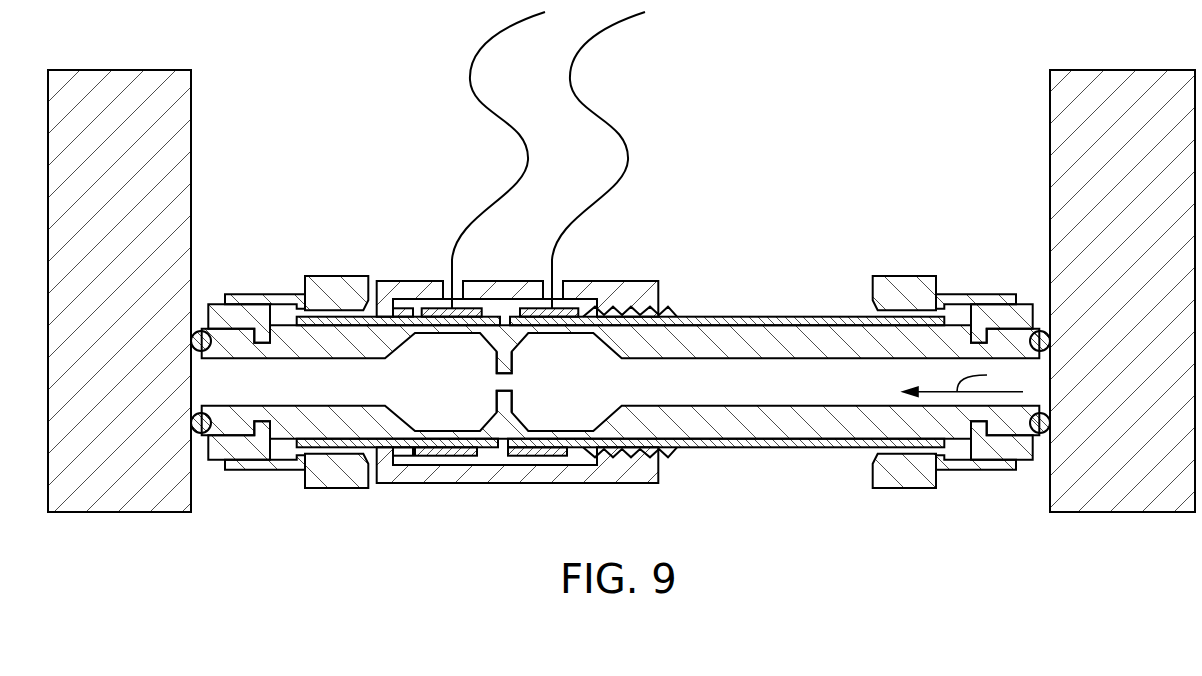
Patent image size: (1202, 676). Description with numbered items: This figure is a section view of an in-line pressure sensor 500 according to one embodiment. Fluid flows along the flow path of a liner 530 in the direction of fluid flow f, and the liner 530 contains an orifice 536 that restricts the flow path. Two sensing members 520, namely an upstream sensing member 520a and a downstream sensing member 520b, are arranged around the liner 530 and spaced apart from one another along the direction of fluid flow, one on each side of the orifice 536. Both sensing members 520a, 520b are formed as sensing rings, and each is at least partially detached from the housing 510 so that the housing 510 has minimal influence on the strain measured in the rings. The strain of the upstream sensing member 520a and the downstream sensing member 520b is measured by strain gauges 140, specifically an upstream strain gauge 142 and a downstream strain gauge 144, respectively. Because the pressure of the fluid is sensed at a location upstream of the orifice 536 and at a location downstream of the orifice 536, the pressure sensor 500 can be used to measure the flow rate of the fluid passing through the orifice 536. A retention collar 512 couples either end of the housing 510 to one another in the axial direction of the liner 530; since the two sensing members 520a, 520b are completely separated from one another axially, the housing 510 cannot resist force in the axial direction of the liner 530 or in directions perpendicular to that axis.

The pressure sensor 500 is at (944, 92).
The housing 510 is at (822, 448).
The retention collar 512 is at (395, 483).
The sensing members 520 is at (504, 496).
The upstream sensing member 520a is at (558, 456).
The downstream sensing member 520b is at (453, 456).
The liner 530 is at (705, 425).
The orifice 536 is at (502, 380).
The strain gauges 140 is at (457, 307).
The upstream strain gauge 142 is at (572, 307).
The downstream strain gauge 144 is at (437, 307).